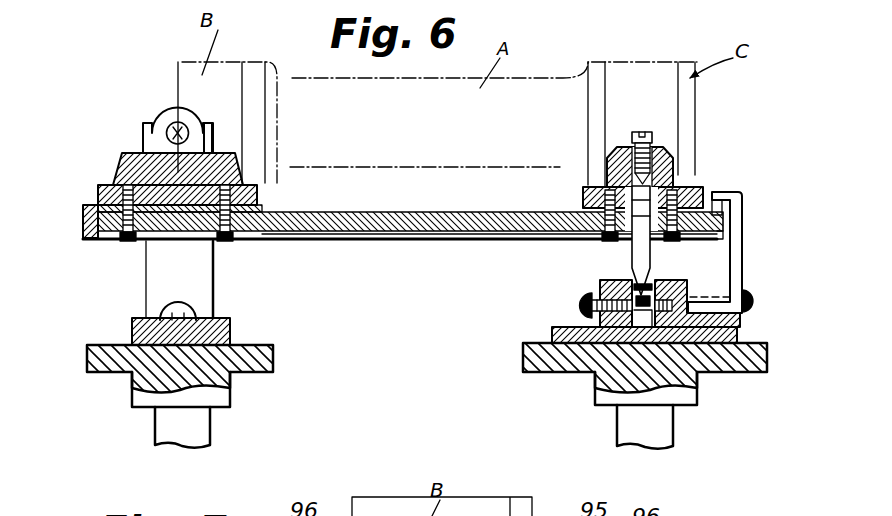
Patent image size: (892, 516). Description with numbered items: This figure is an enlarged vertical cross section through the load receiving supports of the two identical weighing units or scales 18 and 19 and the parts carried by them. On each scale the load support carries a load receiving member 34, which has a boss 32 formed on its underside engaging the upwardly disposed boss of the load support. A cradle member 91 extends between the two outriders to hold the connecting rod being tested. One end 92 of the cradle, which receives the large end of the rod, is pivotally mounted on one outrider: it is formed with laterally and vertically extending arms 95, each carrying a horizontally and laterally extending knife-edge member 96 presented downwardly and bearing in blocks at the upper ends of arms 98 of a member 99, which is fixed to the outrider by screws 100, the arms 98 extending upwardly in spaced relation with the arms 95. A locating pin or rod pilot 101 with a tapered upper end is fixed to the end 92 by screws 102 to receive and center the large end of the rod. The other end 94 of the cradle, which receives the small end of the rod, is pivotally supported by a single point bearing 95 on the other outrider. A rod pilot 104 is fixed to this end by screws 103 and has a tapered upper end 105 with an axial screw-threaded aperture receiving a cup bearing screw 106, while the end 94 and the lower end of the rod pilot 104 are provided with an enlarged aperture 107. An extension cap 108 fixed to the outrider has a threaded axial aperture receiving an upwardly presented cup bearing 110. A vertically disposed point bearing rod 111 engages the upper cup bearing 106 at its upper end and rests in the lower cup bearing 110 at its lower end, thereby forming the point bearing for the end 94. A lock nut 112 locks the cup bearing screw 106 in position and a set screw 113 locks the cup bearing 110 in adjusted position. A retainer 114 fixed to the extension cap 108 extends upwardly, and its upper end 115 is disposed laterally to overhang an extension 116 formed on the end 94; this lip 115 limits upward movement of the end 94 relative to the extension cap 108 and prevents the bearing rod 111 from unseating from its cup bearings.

The weighing unit or scale 18 is at (222, 425).
The weighing unit or scale 19 is at (687, 453).
The boss 32 is at (147, 400).
The load receiving member 34 is at (110, 378).
The cradle member 91 is at (413, 223).
The end of cradle 92 is at (98, 192).
The end of cradle 94 is at (723, 236).
The arms 95 is at (167, 107).
The knife-edge member 96 is at (167, 128).
The arms 98 is at (200, 272).
The member 99 is at (218, 331).
The screws 100 is at (160, 313).
The locating pin or rod pilot 101 is at (130, 157).
The screws 102 is at (129, 243).
The screws 103 is at (600, 203).
The rod pilot 104 is at (600, 185).
The tapered upper end 105 is at (673, 172).
The cup bearing screw 106 is at (630, 135).
The enlarged aperture 107 is at (607, 190).
The extension cap 108 is at (555, 333).
The cup bearing 110 is at (693, 321).
The point bearing rod 111 is at (645, 252).
The lock nut 112 is at (660, 148).
The set screw 113 is at (580, 298).
The retainer 114 is at (742, 270).
The upper end or lip 115 is at (720, 193).
The extension 116 is at (723, 217).